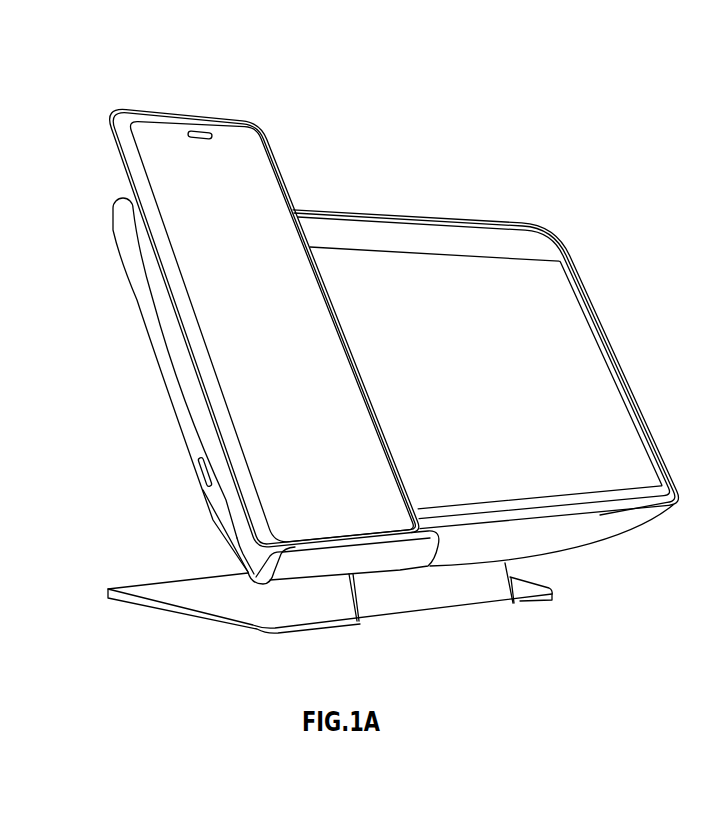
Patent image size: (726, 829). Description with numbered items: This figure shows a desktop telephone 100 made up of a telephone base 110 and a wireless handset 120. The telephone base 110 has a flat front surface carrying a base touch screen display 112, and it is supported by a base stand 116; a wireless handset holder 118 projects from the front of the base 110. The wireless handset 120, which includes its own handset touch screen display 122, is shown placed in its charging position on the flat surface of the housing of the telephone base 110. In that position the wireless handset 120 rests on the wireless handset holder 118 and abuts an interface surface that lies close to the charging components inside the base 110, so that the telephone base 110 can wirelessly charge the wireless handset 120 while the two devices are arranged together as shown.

The desktop telephone 100 is at (417, 139).
The telephone base 110 is at (480, 235).
The base touch screen display 112 is at (563, 407).
The base stand 116 is at (177, 592).
The wireless handset holder 118 is at (400, 557).
The wireless handset 120 is at (195, 128).
The handset touch screen display 122 is at (245, 377).